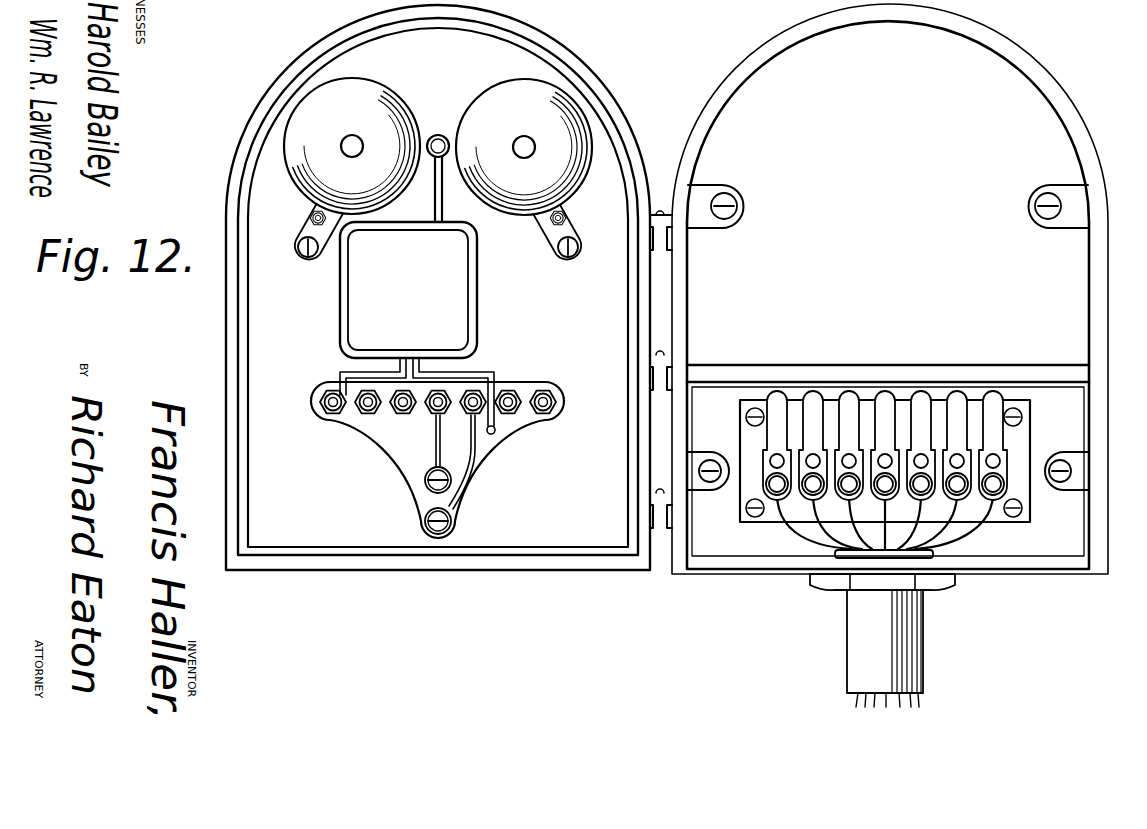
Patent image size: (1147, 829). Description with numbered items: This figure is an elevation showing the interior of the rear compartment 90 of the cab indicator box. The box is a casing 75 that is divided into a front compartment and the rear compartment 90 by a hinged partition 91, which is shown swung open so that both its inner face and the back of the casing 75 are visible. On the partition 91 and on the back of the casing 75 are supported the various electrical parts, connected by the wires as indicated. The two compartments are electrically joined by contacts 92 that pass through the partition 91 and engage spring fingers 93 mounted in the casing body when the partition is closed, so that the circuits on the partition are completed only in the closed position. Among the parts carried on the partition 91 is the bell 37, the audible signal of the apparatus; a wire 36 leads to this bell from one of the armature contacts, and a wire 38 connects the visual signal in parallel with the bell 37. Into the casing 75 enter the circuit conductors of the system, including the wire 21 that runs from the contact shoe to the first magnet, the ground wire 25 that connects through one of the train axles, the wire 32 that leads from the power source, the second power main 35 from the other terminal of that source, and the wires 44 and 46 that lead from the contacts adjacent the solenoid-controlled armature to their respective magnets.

The hinged partition 91 is at (542, 66).
The rear compartment 90 is at (792, 77).
The casing 75 is at (588, 296).
The bell 37 is at (445, 291).
The wire 38 is at (352, 376).
The wire 36 is at (467, 372).
The contacts 92 is at (508, 395).
The spring fingers 93 is at (883, 413).
The wire 44 is at (789, 528).
The wire 46 is at (822, 528).
The wire 21 is at (885, 525).
The power main 35 is at (920, 528).
The wire 25 is at (910, 537).
The wire 32 is at (970, 520).